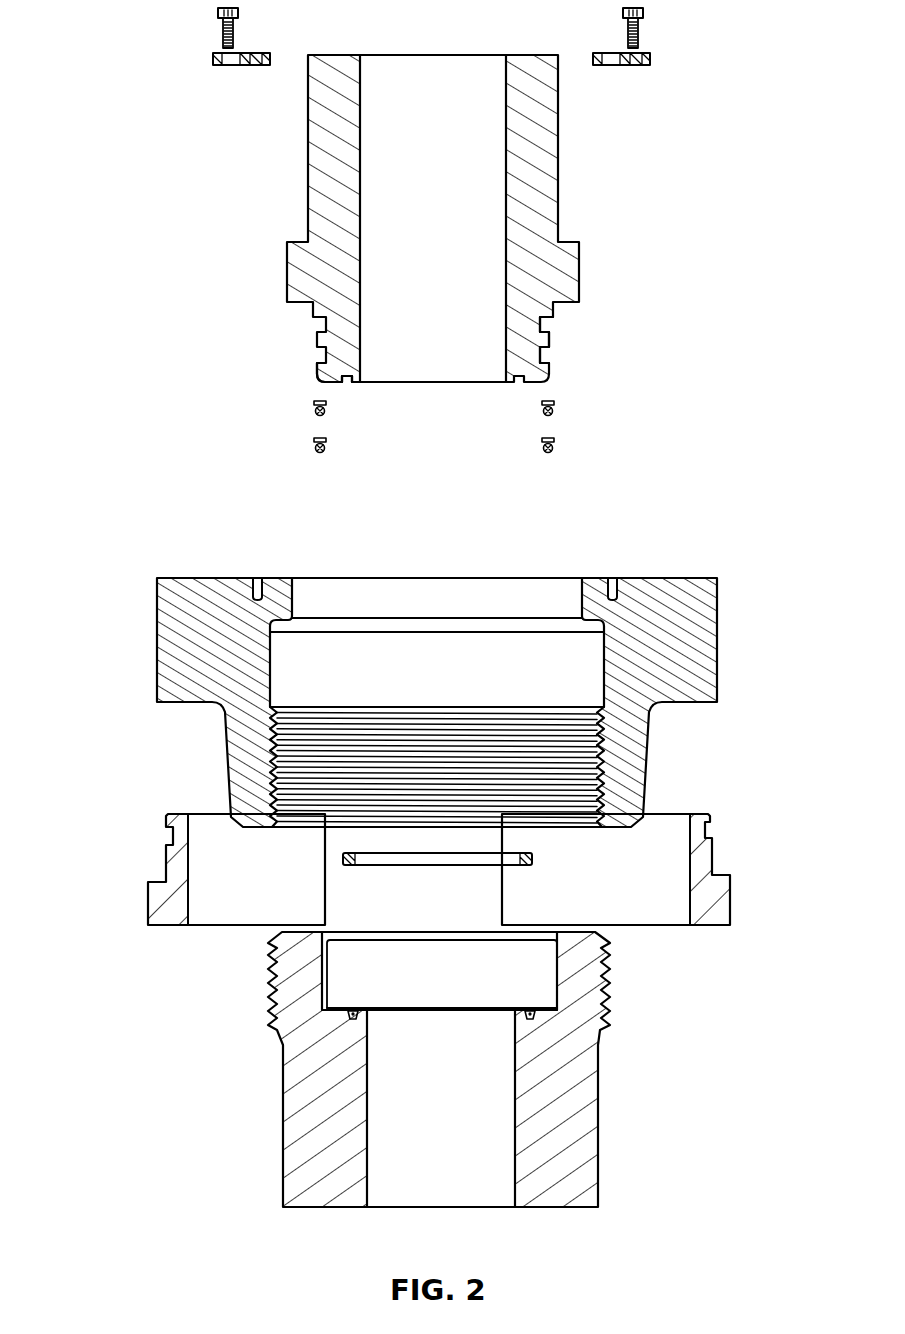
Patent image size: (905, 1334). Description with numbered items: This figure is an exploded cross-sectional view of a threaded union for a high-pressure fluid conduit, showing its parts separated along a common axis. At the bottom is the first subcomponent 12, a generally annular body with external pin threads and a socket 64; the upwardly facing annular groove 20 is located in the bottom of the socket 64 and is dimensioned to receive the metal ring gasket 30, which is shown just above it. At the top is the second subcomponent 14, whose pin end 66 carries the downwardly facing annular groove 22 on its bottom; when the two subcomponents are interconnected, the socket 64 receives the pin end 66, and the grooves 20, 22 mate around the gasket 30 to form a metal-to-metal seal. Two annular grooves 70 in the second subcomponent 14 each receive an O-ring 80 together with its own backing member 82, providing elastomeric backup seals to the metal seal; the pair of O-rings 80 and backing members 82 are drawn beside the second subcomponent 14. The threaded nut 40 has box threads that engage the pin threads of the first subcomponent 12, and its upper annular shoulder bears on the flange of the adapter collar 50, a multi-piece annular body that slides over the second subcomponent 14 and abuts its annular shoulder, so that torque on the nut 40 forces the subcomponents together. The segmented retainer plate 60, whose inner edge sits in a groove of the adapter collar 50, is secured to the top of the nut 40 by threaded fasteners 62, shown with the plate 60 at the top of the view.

The first subcomponent 12 is at (600, 1160).
The second subcomponent 14 is at (580, 248).
The upwardly facing annular groove 20 is at (350, 1011).
The downwardly facing annular groove 22 is at (344, 378).
The metal ring gasket 30 is at (535, 859).
The threaded nut 40 is at (138, 618).
The adapter collar 50 is at (214, 876).
The segmented retainer plate 60 is at (242, 66).
The threaded fasteners 62 is at (237, 30).
The socket 64 is at (557, 940).
The pin end 66 is at (318, 375).
The annular grooves 70 is at (545, 322).
The O-rings 80 is at (543, 410).
The backing members 82 is at (543, 403).